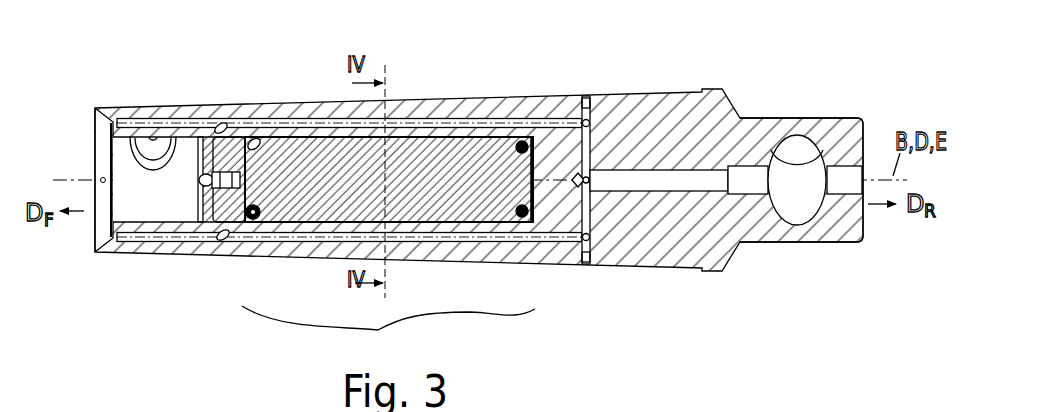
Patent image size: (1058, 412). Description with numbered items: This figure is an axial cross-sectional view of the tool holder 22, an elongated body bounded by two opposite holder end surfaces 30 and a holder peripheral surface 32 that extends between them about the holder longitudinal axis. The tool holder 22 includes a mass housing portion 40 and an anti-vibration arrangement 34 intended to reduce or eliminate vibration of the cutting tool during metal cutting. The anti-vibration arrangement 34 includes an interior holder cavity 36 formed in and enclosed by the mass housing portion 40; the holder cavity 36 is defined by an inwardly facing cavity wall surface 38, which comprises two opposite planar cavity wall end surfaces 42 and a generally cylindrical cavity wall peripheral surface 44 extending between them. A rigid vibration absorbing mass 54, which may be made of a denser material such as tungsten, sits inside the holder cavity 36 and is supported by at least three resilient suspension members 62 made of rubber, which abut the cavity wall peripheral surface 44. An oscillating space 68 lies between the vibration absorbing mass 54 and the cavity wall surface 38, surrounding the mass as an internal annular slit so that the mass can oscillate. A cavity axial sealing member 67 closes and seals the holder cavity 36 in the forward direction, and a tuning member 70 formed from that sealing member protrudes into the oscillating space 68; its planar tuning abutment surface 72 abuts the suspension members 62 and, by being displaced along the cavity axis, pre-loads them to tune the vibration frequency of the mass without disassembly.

The tool holder 22 is at (479, 135).
The holder end surfaces 30 is at (95, 150).
The holder peripheral surface 32 is at (492, 99).
The anti-vibration arrangement 34 is at (388, 332).
The holder cavity 36 is at (389, 117).
The cavity wall surface 38 is at (297, 137).
The mass housing portion 40 is at (460, 100).
The cavity wall end surfaces 42 is at (341, 200).
The cavity wall peripheral surface 44 is at (263, 217).
The vibration absorbing mass 54 is at (523, 142).
The suspension members 62 is at (253, 138).
The cavity axial sealing member 67 is at (188, 74).
The oscillating space 68 is at (397, 140).
The tuning member 70 is at (212, 127).
The tuning abutment surface 72 is at (232, 205).